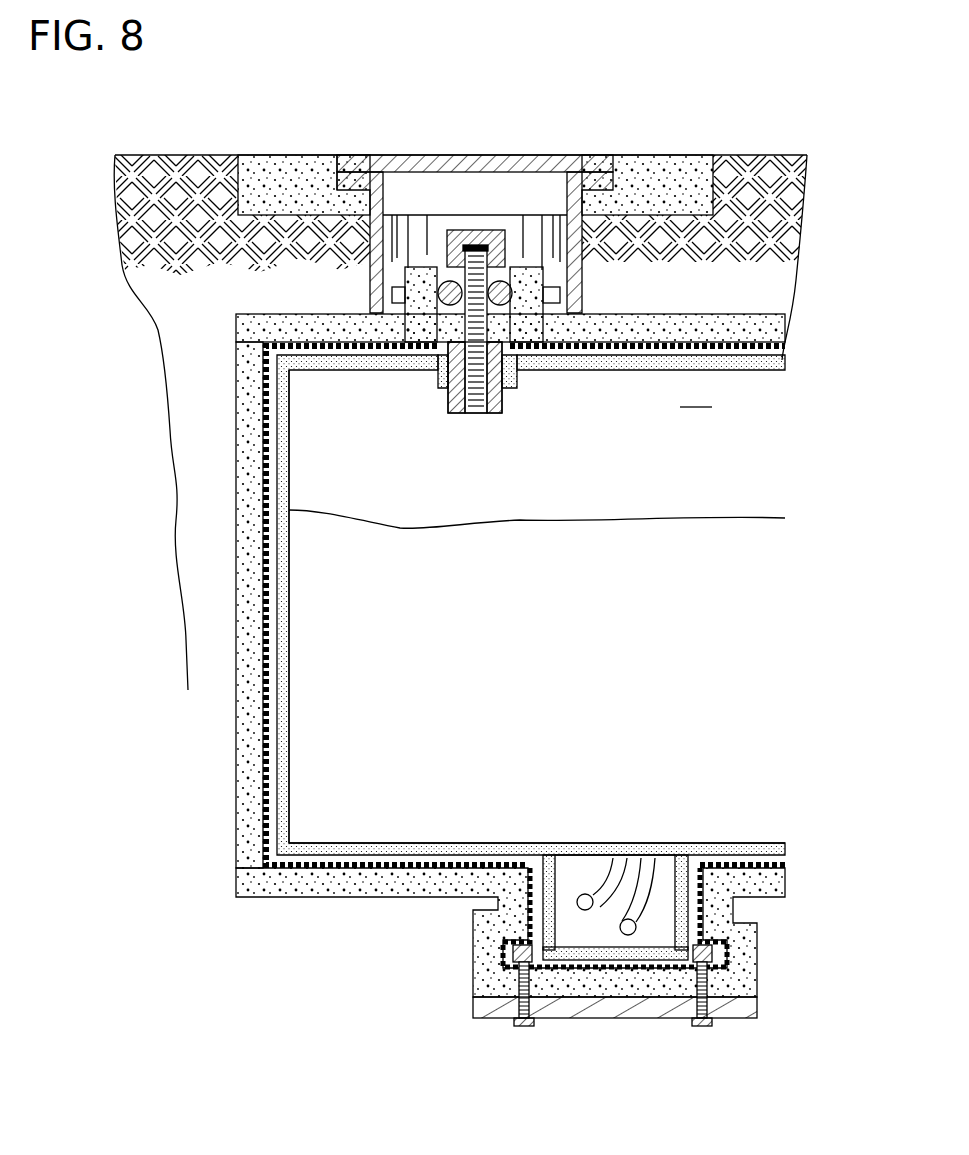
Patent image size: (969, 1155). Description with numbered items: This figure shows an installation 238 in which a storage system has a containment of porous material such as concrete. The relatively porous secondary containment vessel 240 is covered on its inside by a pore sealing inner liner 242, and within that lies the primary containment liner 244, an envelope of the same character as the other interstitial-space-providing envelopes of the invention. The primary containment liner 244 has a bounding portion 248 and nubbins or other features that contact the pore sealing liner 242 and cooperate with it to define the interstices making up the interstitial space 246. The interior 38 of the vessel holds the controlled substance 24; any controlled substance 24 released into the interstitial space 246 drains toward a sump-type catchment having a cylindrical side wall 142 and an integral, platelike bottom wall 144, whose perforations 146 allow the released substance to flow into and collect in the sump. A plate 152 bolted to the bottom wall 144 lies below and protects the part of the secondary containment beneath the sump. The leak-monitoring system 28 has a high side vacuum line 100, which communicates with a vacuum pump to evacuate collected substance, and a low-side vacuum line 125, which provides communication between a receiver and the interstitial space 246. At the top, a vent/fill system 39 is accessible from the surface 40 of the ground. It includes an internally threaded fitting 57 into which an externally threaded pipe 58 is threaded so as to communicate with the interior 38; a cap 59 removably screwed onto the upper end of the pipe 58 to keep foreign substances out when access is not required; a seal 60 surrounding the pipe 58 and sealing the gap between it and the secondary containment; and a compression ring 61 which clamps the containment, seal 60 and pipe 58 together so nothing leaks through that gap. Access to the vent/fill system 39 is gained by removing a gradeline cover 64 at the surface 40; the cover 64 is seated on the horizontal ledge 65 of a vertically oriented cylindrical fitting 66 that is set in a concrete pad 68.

The controlled substance 24 is at (600, 525).
The system 28 is at (632, 838).
The interior 38 is at (696, 394).
The vent/fill system 39 is at (342, 135).
The surface 40 is at (755, 156).
The internally threaded fitting 57 is at (505, 405).
The externally threaded pipe 58 is at (447, 398).
The cap 59 is at (478, 230).
The seal 60 is at (508, 278).
The compression ring 61 is at (560, 297).
The gradeline cover 64 is at (505, 156).
The horizontal ledge 65 is at (585, 158).
The cylindrical fitting 66 is at (330, 166).
The concrete pad 68 is at (665, 156).
The high side vacuum line 100 is at (630, 904).
The vacuum line 125 is at (583, 870).
The cylindrical side wall 142 is at (688, 858).
The bottom wall 144 is at (590, 978).
The perforations 146 is at (668, 960).
The plate 152 is at (732, 1018).
The installation 238 is at (442, 632).
The secondary containment vessel 240 is at (222, 702).
The pore sealing inner liner 242 is at (250, 756).
The primary containment liner 244 is at (305, 681).
The interstitial space 246 is at (283, 600).
The bounding portion 248 is at (380, 842).